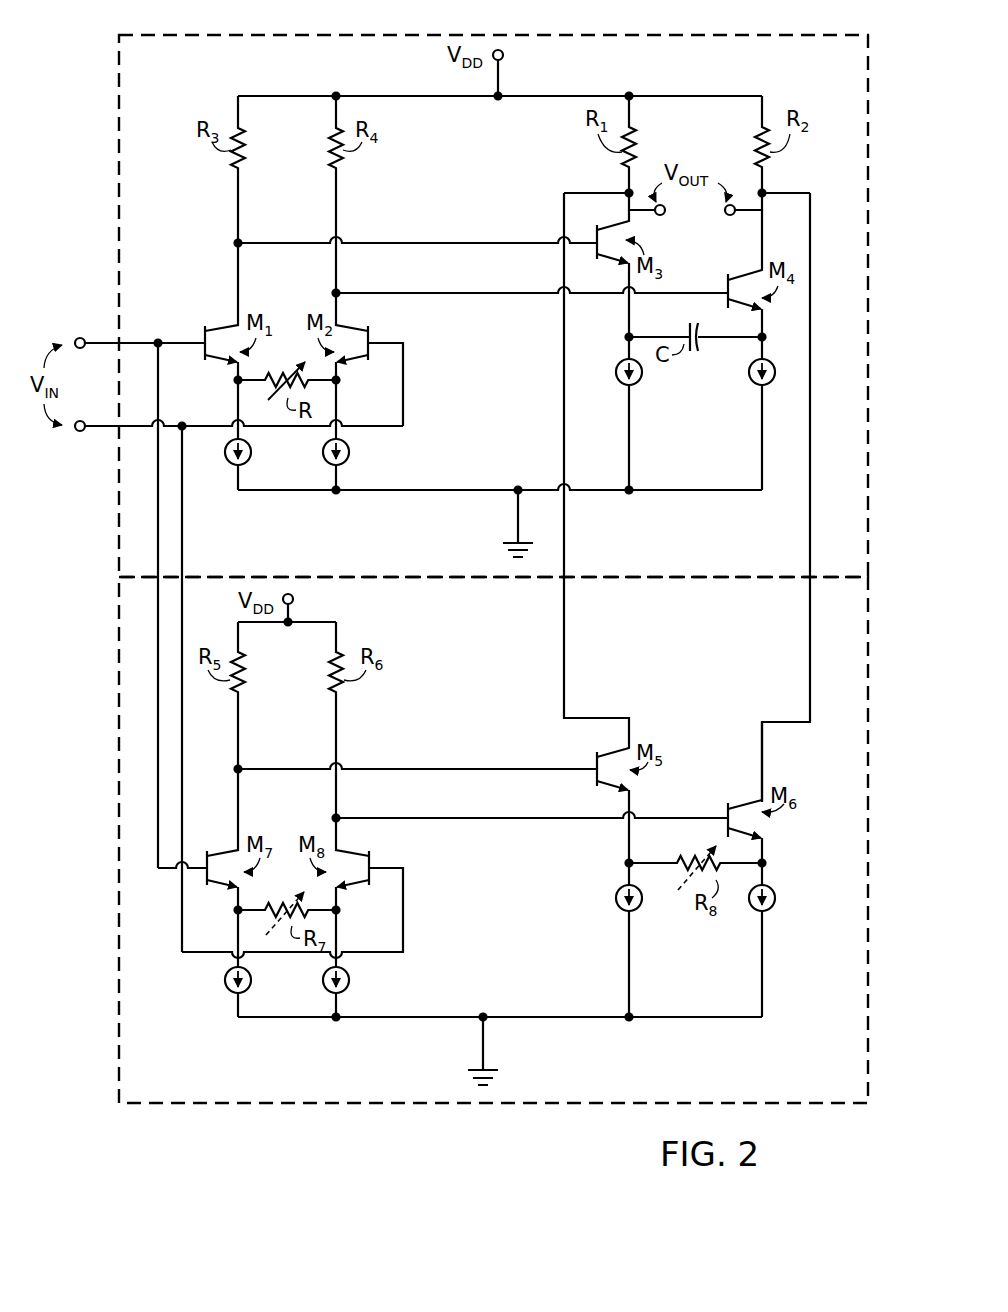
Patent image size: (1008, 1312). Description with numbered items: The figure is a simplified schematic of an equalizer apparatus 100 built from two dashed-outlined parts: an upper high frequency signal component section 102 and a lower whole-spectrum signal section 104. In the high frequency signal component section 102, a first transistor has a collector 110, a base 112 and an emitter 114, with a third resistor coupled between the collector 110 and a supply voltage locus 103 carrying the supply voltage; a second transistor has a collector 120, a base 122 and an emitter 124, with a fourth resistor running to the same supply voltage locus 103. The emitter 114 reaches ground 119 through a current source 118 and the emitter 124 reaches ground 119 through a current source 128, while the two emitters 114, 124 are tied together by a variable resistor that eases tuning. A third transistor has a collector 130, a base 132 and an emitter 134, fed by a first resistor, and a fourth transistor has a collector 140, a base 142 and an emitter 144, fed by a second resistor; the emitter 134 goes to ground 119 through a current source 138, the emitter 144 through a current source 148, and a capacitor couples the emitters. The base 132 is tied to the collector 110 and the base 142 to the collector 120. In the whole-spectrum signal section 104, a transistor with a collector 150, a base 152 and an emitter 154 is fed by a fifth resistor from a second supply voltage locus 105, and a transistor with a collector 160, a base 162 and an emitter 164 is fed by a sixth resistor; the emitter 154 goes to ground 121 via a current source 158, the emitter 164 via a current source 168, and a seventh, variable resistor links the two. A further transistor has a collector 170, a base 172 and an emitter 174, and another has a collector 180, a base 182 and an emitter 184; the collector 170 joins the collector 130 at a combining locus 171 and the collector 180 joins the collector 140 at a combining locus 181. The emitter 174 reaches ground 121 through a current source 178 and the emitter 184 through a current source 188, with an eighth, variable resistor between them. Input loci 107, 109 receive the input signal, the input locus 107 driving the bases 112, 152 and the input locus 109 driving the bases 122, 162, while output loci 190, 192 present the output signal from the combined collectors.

The equalizer apparatus 100 is at (385, 1136).
The high frequency signal component section 102 is at (225, 34).
The supply voltage locus 103 is at (504, 58).
The whole-spectrum signal section 104 is at (252, 1103).
The supply voltage locus 105 is at (294, 601).
The input locus 107 is at (82, 337).
The input locus 109 is at (82, 432).
The collector 110 is at (193, 366).
The base 112 is at (200, 332).
The emitter 114 is at (222, 362).
The current source 118 is at (226, 462).
The ground 119 is at (515, 538).
The collector 120 is at (387, 389).
The ground 121 is at (498, 1068).
The base 122 is at (382, 340).
The emitter 124 is at (354, 362).
The current source 128 is at (349, 450).
The collector 130 is at (573, 344).
The base 132 is at (590, 240).
The emitter 134 is at (615, 258).
The current source 138 is at (642, 378).
The collector 140 is at (717, 350).
The base 142 is at (724, 282).
The emitter 144 is at (748, 304).
The current source 148 is at (749, 372).
The collector 150 is at (187, 893).
The base 152 is at (200, 868).
The emitter 154 is at (222, 885).
The current source 158 is at (226, 980).
The collector 160 is at (310, 916).
The base 162 is at (382, 860).
The emitter 164 is at (354, 885).
The current source 168 is at (349, 978).
The collector 170 is at (573, 870).
The combining locus 171 is at (626, 190).
The base 172 is at (580, 767).
The emitter 174 is at (606, 785).
The current source 178 is at (616, 896).
The collector 180 is at (743, 869).
The combining locus 181 is at (765, 192).
The base 182 is at (724, 810).
The emitter 184 is at (754, 830).
The current source 188 is at (775, 896).
The output locus 190 is at (665, 214).
The output locus 192 is at (725, 214).